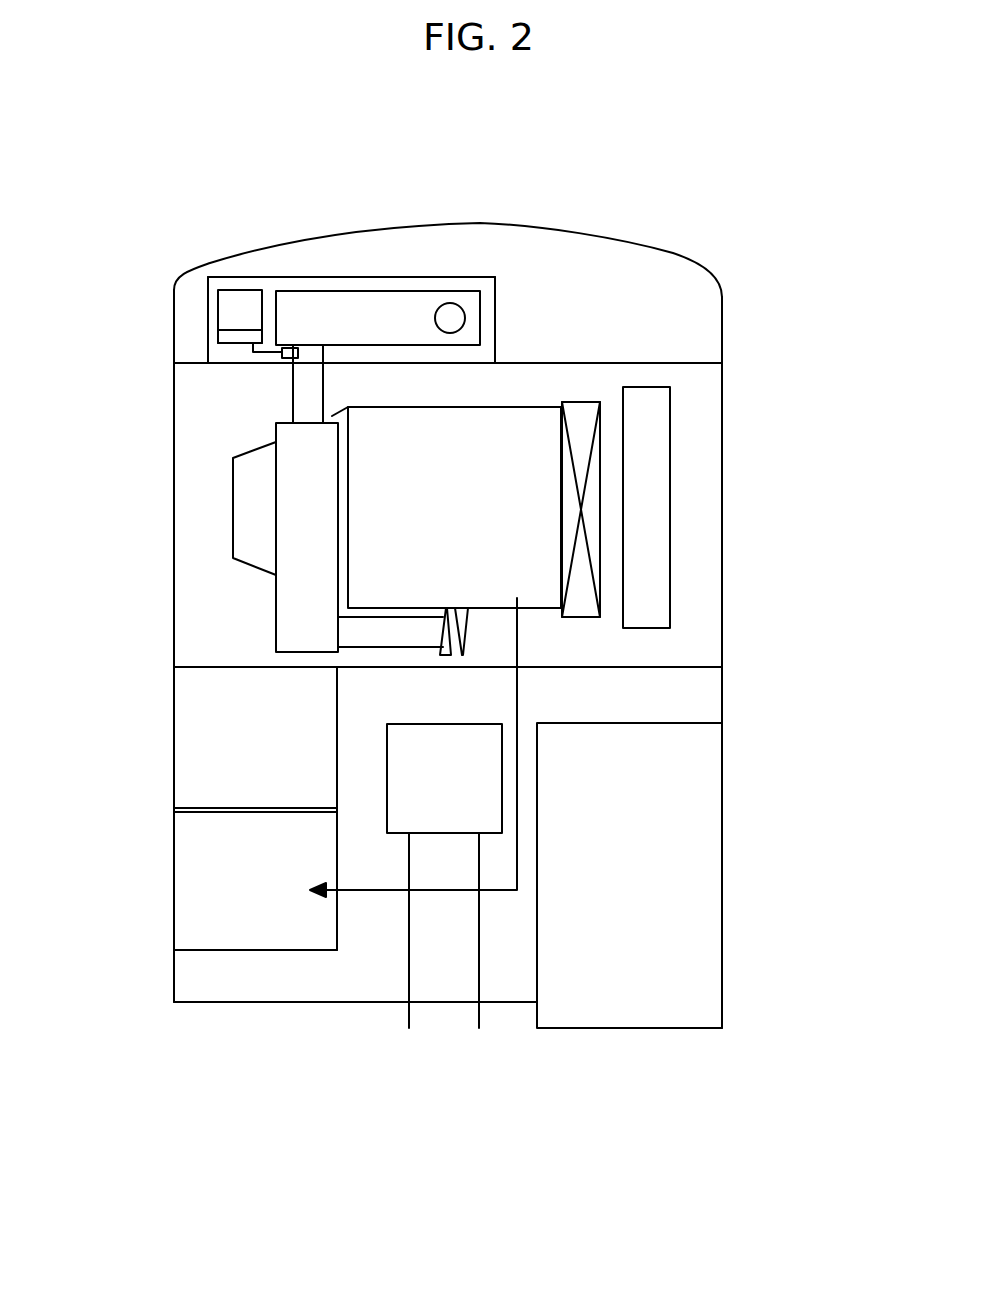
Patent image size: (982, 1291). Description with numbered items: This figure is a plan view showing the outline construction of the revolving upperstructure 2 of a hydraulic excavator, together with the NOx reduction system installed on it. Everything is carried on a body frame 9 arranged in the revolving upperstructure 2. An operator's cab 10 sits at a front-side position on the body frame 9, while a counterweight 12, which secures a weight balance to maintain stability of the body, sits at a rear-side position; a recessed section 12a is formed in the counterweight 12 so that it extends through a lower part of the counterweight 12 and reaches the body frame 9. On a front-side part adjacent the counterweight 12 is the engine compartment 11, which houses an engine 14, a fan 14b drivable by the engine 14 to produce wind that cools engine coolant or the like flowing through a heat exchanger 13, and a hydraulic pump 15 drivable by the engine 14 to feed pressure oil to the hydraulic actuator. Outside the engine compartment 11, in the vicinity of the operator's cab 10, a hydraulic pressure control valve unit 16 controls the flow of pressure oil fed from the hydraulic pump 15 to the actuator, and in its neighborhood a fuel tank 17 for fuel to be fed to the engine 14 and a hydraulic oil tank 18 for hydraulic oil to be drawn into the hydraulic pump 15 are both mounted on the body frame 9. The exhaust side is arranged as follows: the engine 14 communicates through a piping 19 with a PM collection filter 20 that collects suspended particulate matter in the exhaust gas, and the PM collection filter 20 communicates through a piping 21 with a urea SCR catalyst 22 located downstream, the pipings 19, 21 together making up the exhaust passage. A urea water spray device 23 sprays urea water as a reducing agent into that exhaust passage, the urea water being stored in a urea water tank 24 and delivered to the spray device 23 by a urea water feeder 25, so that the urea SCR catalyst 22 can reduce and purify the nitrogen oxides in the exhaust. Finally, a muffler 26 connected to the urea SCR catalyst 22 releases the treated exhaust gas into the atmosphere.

The revolving upperstructure 2 is at (722, 443).
The body frame 9 is at (172, 558).
The operator's cab 10 is at (653, 985).
The engine compartment 11 is at (697, 562).
The counterweight 12 is at (533, 225).
The recessed section 12a is at (368, 283).
The heat exchanger 13 is at (655, 418).
The engine 14 is at (488, 457).
The fan 14b is at (580, 413).
The hydraulic pump 15 is at (250, 500).
The hydraulic pressure control valve unit 16 is at (407, 807).
The fuel tank 17 is at (207, 882).
The hydraulic oil tank 18 is at (208, 760).
The piping 19 is at (380, 637).
The PM collection filter 20 is at (297, 628).
The piping 21 is at (305, 402).
The urea SCR catalyst 22 is at (327, 308).
The urea water spray device 23 is at (288, 350).
The urea water tank 24 is at (240, 308).
The urea water feeder 25 is at (227, 340).
The muffler 26 is at (445, 318).